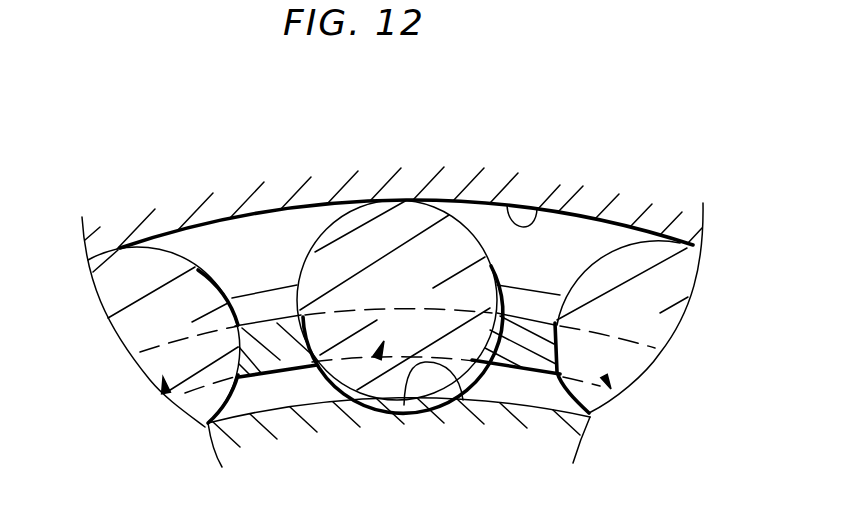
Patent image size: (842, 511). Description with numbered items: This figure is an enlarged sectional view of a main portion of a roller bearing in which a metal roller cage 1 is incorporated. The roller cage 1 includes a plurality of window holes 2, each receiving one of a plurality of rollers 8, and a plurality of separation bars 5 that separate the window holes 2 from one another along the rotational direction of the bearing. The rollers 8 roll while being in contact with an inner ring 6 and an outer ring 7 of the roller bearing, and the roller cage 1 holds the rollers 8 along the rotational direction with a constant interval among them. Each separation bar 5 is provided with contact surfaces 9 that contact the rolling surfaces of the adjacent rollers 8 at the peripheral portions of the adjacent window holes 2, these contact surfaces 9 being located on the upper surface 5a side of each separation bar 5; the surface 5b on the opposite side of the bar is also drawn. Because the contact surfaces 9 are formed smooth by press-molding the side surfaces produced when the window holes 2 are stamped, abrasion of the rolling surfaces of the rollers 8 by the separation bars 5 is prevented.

The roller cage 1 is at (262, 289).
The window holes 2 is at (158, 405).
The separation bars 5 is at (299, 367).
The upper surface 5a is at (256, 322).
The inner surface of cam block 5b is at (259, 378).
The inner ring 6 is at (507, 205).
The outer ring 7 is at (404, 405).
The rollers 8 is at (159, 330).
The contact surfaces 9 is at (237, 334).